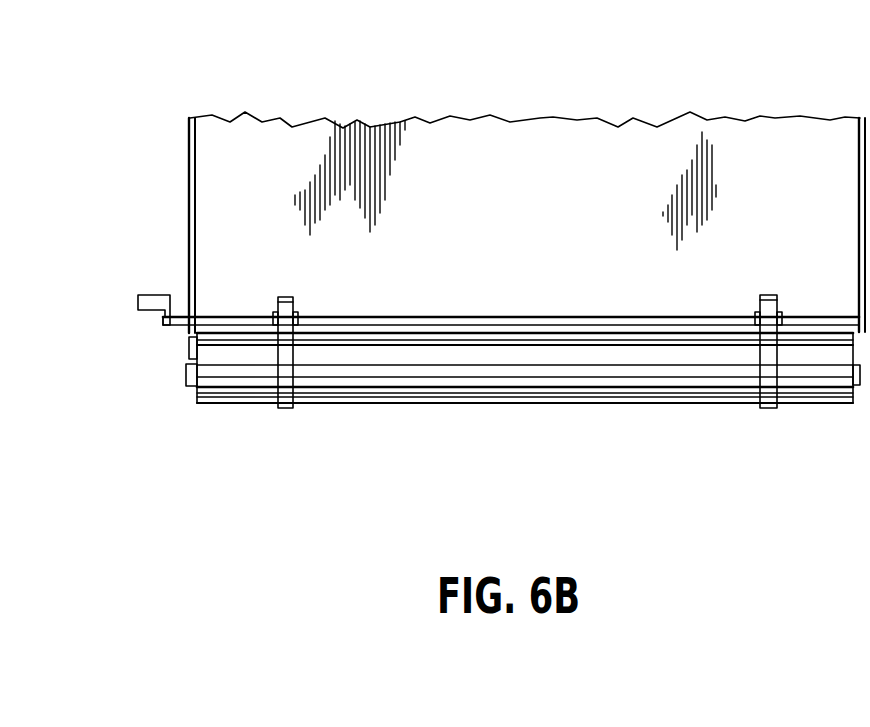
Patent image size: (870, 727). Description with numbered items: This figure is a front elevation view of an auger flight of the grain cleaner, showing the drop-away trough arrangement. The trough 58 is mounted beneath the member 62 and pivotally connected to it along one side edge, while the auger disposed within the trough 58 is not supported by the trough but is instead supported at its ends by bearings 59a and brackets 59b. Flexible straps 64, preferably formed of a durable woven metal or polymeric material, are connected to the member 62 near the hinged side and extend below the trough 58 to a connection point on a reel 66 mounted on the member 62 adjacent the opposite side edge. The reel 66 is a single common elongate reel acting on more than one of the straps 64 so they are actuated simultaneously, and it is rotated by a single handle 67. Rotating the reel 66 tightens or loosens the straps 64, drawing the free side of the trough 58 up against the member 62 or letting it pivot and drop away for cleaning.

The member 62 is at (576, 142).
The reel 66 is at (538, 314).
The handle 67 is at (148, 295).
The trough 58 is at (481, 384).
The bearings 59a is at (187, 375).
The brackets 59b is at (188, 353).
The flexible straps 64 is at (287, 357).